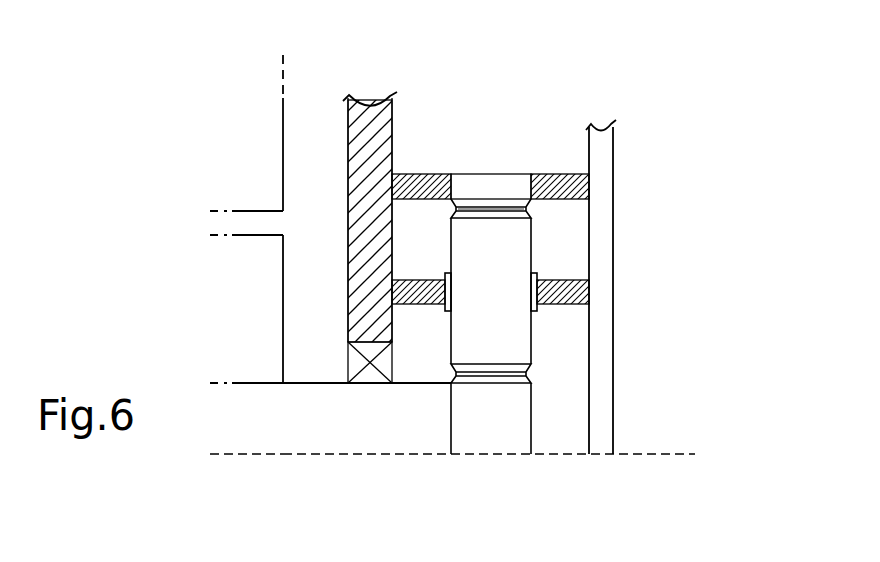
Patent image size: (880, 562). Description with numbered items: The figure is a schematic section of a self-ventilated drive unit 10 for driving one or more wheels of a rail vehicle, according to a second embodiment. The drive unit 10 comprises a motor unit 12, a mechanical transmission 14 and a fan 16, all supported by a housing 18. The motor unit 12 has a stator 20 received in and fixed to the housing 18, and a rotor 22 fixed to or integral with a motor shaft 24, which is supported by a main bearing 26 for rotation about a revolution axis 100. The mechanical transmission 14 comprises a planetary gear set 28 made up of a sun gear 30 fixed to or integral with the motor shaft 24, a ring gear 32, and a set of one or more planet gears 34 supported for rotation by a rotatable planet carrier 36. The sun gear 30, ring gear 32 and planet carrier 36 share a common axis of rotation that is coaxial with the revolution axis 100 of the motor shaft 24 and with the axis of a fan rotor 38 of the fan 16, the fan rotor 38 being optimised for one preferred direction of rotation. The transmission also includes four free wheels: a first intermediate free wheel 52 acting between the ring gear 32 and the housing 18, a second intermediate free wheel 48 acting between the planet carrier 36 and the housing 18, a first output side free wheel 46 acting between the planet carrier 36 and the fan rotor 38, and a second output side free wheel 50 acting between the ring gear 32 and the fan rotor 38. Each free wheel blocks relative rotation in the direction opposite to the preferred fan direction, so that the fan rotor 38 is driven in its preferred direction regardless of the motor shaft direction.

The drive unit 10 is at (668, 118).
The motor unit 12 is at (312, 86).
The mechanical transmission 14 is at (529, 97).
The fan 16 is at (614, 97).
The housing 18 is at (357, 155).
The stator 20 is at (265, 142).
The rotor 22 is at (258, 287).
The motor shaft 24 is at (360, 437).
The main bearing 26 is at (358, 362).
The planetary gear set 28 is at (583, 229).
The sun gear 30 is at (519, 431).
The ring gear 32 is at (507, 183).
The planet gears 34 is at (522, 339).
The planet carrier 36 is at (538, 311).
The fan rotor 38 is at (605, 261).
The first output side free wheel 46 is at (588, 300).
The second intermediate free wheel 48 is at (405, 278).
The second output side free wheel 50 is at (585, 174).
The first intermediate free wheel 52 is at (441, 175).
The revolution axis 100 is at (658, 453).